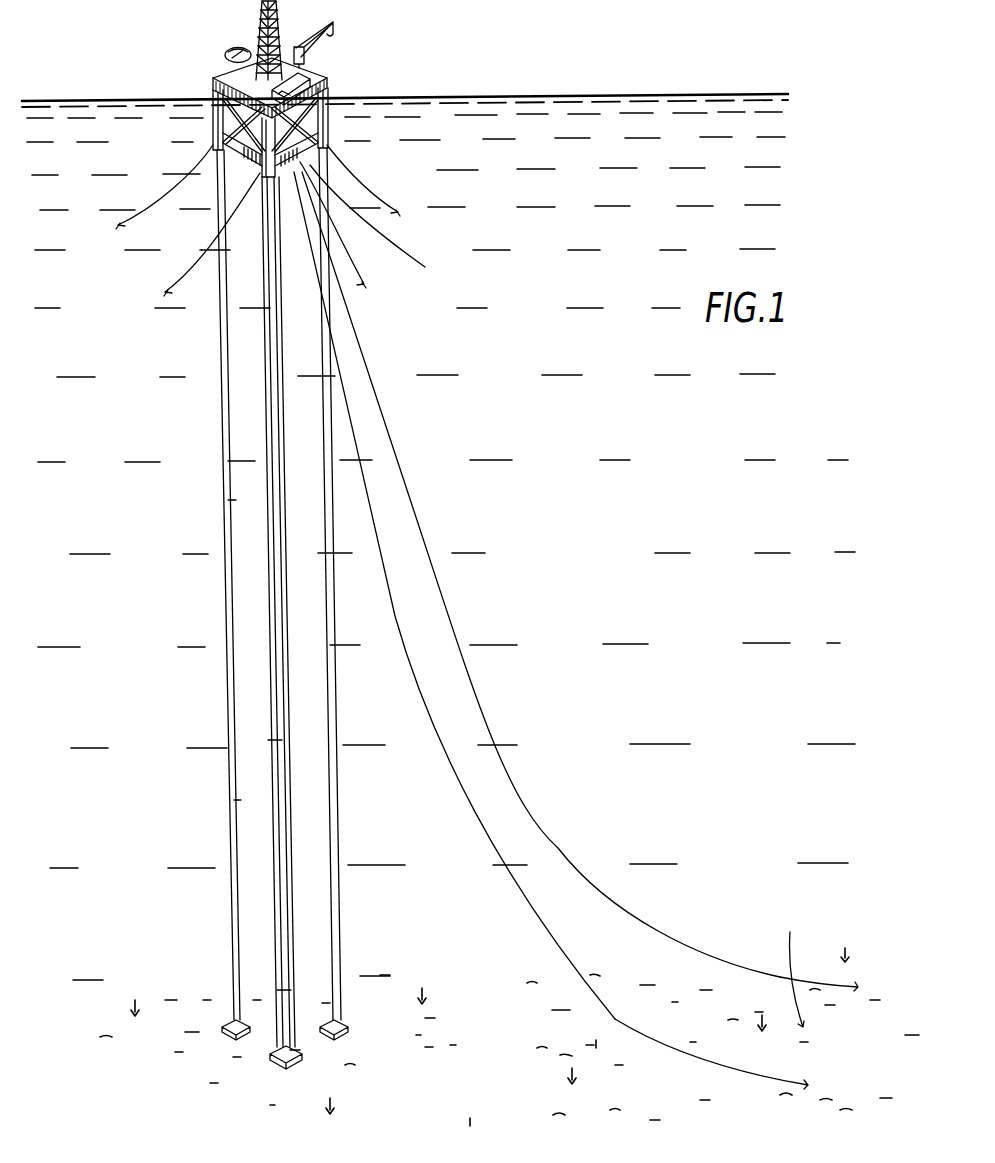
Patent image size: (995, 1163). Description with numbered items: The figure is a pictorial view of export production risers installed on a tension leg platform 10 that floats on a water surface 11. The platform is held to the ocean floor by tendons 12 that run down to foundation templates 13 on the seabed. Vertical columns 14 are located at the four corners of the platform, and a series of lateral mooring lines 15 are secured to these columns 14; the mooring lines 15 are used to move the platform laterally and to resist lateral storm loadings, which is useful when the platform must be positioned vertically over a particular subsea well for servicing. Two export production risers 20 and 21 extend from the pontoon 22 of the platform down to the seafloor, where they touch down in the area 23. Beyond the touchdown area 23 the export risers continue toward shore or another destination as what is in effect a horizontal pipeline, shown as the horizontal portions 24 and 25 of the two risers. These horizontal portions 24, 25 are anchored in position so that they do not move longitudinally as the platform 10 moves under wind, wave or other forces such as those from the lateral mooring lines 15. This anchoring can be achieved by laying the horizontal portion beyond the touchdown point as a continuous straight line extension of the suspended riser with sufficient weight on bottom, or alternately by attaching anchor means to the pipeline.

The tension leg platform 10 is at (347, 58).
The water surface 11 is at (640, 94).
The tendons 12 is at (228, 669).
The foundation templates 13 is at (230, 1046).
The vertical columns 14 is at (213, 118).
The lateral mooring lines 15 is at (142, 218).
The export production riser 20 is at (405, 500).
The export production riser 21 is at (395, 619).
The pontoon 22 is at (420, 264).
The touchdown area 23 is at (790, 968).
The horizontal portion 24 is at (718, 960).
The horizontal portion 25 is at (708, 1065).